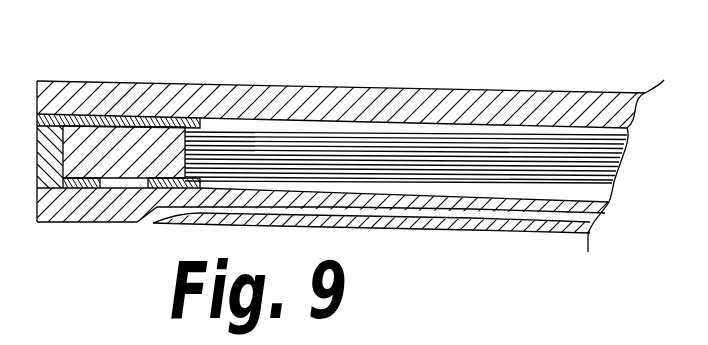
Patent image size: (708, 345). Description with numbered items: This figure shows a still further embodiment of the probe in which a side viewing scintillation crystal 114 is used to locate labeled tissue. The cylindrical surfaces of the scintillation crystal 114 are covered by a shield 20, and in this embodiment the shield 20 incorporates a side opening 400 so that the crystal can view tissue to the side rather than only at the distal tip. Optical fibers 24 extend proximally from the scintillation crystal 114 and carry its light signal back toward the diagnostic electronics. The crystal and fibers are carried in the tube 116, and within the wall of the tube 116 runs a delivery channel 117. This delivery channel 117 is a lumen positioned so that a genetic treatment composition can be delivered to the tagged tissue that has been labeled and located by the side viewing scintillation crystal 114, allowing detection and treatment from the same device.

The shield 20 is at (102, 118).
The scintillation crystal 114 is at (138, 145).
The optical fibers 24 is at (367, 158).
The tube 116 is at (515, 103).
The side opening 400 is at (125, 183).
The delivery channel 117 is at (442, 212).